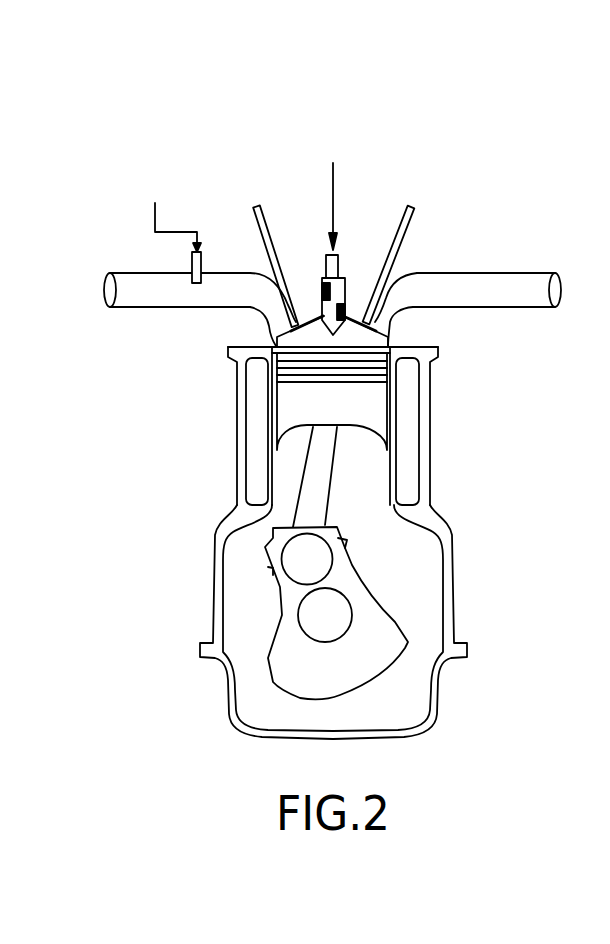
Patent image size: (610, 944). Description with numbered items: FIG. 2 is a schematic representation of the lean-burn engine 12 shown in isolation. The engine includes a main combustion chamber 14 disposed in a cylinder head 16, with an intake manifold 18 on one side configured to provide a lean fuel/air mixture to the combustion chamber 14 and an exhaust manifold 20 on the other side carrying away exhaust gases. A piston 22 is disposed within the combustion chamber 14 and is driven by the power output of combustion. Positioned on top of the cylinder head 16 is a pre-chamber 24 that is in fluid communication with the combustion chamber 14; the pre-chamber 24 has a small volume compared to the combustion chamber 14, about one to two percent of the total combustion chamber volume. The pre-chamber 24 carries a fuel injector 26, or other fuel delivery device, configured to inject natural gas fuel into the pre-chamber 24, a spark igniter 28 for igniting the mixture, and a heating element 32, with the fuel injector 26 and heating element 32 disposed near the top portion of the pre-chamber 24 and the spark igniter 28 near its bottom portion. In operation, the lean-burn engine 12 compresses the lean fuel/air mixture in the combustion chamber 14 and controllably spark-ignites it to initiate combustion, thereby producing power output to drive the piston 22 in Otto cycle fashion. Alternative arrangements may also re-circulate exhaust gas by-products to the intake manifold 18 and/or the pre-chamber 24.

The lean-burn engine 12 is at (478, 128).
The main combustion chamber 14 is at (297, 343).
The cylinder head 16 is at (388, 338).
The intake manifold 18 is at (145, 308).
The exhaust manifold 20 is at (517, 273).
The piston 22 is at (373, 408).
The pre-chamber 24 is at (347, 298).
The fuel injector 26 is at (342, 280).
The spark igniter 28 is at (382, 283).
The heating element 32 is at (325, 290).